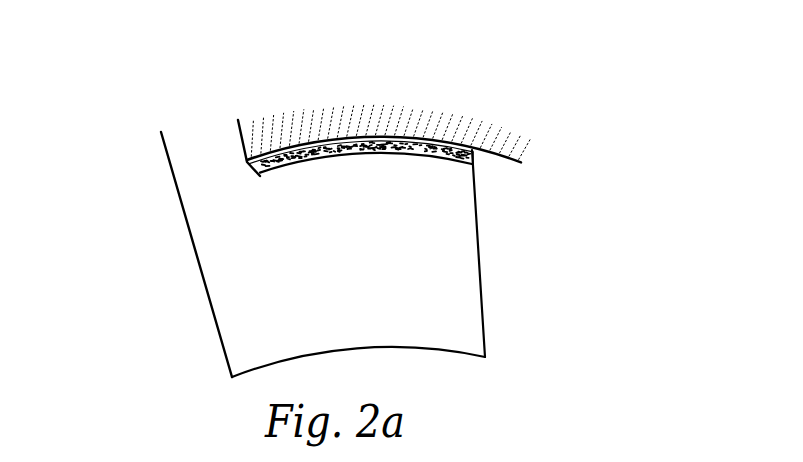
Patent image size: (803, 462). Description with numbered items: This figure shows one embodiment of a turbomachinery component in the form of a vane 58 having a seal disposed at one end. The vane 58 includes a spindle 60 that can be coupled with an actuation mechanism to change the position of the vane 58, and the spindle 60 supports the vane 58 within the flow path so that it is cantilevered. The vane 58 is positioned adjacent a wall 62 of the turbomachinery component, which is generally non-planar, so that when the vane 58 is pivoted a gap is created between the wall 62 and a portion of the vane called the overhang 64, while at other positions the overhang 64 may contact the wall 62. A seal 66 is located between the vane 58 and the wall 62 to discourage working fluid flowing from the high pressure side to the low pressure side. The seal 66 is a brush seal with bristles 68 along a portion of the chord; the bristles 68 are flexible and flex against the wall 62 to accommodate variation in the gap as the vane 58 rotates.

The vane 58 is at (283, 254).
The spindle 60 is at (188, 175).
The wall 62 is at (435, 127).
The overhang 64 is at (245, 167).
The seal 66 is at (413, 152).
The bristles 68 is at (313, 160).